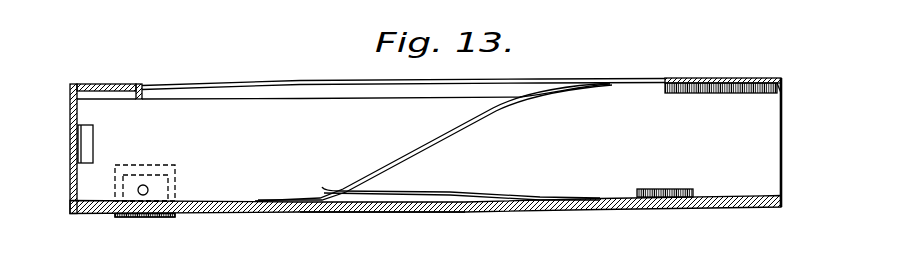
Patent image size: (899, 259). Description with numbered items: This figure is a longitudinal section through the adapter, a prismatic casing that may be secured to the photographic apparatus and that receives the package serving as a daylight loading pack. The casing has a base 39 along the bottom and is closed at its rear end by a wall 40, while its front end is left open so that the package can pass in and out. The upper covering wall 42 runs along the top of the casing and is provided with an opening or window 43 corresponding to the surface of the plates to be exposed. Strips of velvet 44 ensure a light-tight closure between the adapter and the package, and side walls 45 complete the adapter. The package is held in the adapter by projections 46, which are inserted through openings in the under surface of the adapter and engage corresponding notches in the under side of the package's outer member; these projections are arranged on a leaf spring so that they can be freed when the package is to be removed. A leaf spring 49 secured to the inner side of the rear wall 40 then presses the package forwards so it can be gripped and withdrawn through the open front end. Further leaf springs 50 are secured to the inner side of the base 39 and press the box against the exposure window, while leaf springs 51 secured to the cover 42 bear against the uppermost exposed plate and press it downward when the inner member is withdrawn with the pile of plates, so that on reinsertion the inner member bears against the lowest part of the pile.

The base 39 is at (374, 212).
The wall 40 is at (70, 201).
The upper covering wall 42 is at (135, 73).
The opening or window 43 is at (277, 84).
The strips of velvet 44 is at (672, 167).
The side walls 45 is at (571, 173).
The projections 46 is at (148, 198).
The leaf spring 49 is at (159, 145).
The leaf springs 50 is at (441, 192).
The leaf springs 51 is at (456, 130).